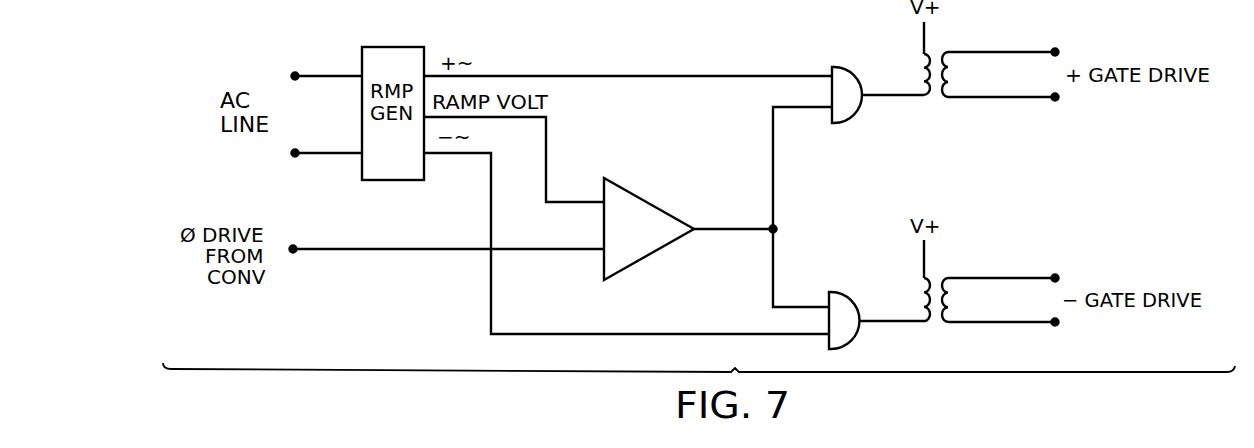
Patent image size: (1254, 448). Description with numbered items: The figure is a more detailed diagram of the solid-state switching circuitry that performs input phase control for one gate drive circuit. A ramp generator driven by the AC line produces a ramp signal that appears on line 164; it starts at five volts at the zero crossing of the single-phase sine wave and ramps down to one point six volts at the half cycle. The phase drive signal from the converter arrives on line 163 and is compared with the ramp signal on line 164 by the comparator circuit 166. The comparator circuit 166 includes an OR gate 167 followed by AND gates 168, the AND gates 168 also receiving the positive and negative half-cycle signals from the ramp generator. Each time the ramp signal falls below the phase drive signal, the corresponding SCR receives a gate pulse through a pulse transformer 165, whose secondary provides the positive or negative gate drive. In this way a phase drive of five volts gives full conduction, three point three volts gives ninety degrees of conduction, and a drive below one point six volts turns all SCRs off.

The phase drive signal line 163 is at (369, 251).
The ramp signal line 164 is at (548, 156).
The pulse transformer 165 is at (937, 97).
The comparator circuit 166 is at (656, 341).
The OR gate 167 is at (645, 200).
The AND gates 168 is at (858, 108).